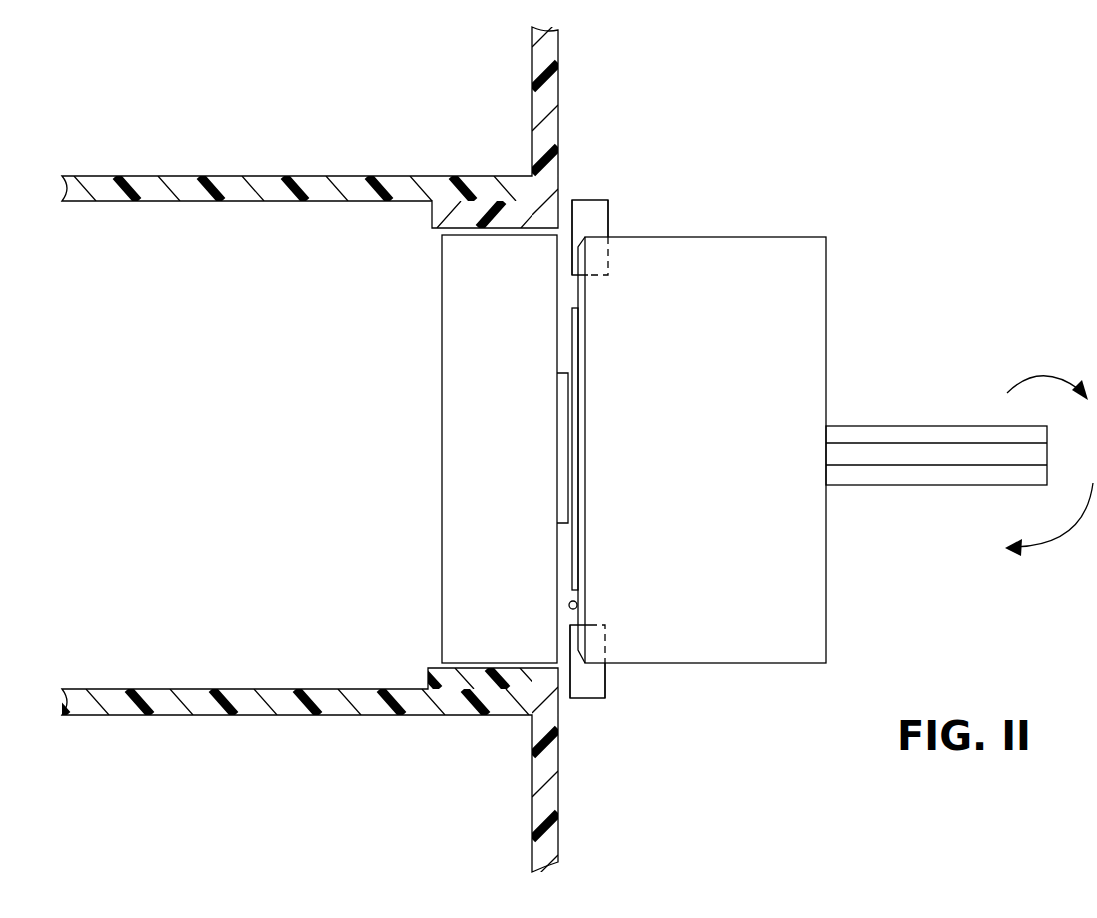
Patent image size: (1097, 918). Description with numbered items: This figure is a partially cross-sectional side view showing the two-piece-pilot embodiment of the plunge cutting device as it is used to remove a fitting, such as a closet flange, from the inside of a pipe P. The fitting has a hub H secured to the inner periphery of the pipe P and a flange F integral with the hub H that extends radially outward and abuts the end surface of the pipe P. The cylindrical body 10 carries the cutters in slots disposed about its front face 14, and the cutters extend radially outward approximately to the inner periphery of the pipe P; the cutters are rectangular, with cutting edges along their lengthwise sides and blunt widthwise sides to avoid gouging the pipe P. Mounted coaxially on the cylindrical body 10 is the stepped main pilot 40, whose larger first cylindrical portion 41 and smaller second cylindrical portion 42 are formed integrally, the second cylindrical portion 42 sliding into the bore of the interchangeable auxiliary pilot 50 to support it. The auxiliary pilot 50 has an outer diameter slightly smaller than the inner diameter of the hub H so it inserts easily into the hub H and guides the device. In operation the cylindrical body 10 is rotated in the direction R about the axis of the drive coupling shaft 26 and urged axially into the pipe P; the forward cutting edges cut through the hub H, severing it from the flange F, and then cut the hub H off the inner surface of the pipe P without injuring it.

The cylindrical body 10 is at (736, 237).
The front face 14 is at (583, 615).
The drive coupling shaft 26 is at (907, 487).
The main pilot 40 is at (566, 372).
The first cylindrical portion 41 is at (572, 570).
The second cylindrical portion 42 is at (568, 485).
The auxiliary pilot 50 is at (440, 562).
The pipe P is at (183, 689).
The hub H is at (430, 688).
The flange F is at (557, 758).
The rotation direction R is at (1050, 466).